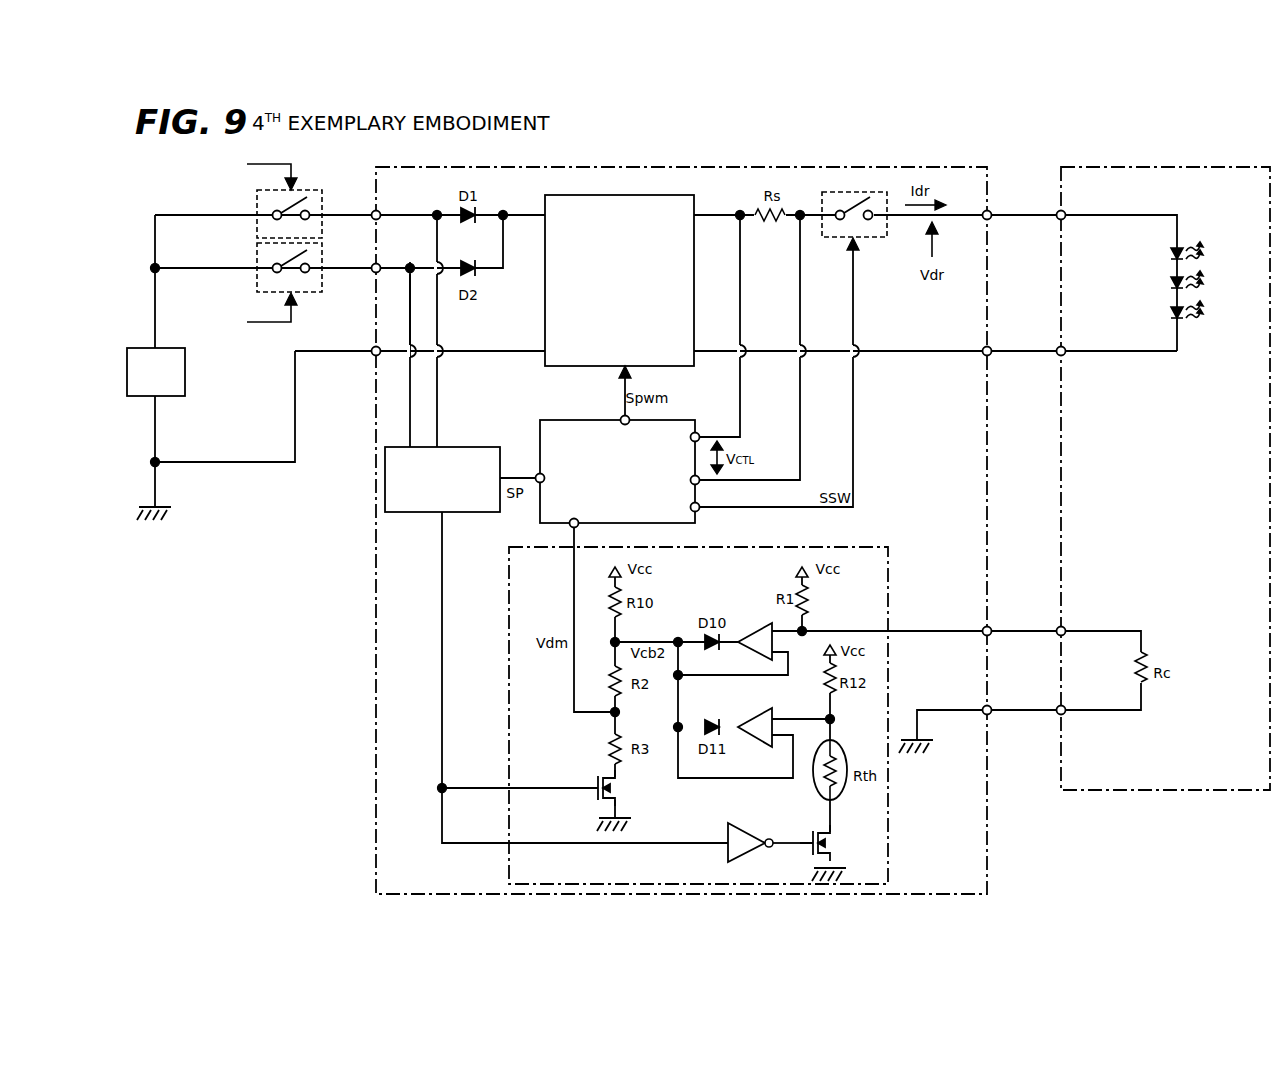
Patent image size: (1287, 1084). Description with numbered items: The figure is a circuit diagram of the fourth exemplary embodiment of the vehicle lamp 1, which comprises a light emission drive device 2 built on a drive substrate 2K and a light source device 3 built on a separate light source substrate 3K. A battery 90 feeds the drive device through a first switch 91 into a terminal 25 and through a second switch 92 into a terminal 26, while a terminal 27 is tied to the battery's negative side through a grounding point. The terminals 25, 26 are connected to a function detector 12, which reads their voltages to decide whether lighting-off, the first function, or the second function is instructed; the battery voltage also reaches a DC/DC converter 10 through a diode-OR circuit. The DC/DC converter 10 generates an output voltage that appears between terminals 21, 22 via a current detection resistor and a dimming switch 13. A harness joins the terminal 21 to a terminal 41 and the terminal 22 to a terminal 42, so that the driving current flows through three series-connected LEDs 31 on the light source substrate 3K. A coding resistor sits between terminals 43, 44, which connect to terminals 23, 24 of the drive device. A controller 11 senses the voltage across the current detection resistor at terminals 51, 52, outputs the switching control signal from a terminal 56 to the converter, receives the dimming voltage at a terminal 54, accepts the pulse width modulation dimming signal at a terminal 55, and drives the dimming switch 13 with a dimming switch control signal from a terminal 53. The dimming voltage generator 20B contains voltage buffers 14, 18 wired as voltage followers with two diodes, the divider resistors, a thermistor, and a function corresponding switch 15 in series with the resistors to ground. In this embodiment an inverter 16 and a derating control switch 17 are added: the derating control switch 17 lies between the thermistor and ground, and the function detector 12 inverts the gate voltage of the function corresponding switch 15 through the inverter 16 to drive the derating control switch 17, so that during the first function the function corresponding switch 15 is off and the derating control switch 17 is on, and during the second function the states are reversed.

The vehicle lamp 1 is at (1062, 137).
The light emission drive device 2 is at (977, 167).
The light source device 3 is at (1072, 166).
The drive substrate 2K is at (710, 167).
The light source substrate 3K is at (1172, 167).
The DC/DC converter 10 is at (645, 194).
The controller 11 is at (545, 419).
The function detector 12 is at (425, 513).
The dimming switch 13 is at (880, 191).
The voltage buffer 14 is at (760, 622).
The function corresponding switch 15 is at (620, 790).
The inverter 16 is at (755, 836).
The derating control switch 17 is at (835, 840).
The voltage buffer 18 is at (765, 712).
The dimming voltage generator 20B is at (888, 547).
The terminal 21 is at (986, 219).
The terminal 22 is at (986, 356).
The terminal 23 is at (984, 630).
The terminal 24 is at (985, 714).
The terminal 25 is at (374, 212).
The terminal 26 is at (374, 271).
The terminal 27 is at (374, 354).
The LED 31 is at (1160, 315).
The terminal 41 is at (1064, 213).
The terminal 42 is at (1063, 355).
The terminal 43 is at (1064, 629).
The terminal 44 is at (1063, 713).
The terminal 51 is at (697, 435).
The terminal 52 is at (698, 482).
The terminal 53 is at (698, 510).
The terminal 54 is at (571, 524).
The terminal 55 is at (537, 476).
The terminal 56 is at (622, 419).
The battery 90 is at (186, 372).
The first switch 91 is at (256, 203).
The second switch 92 is at (256, 258).